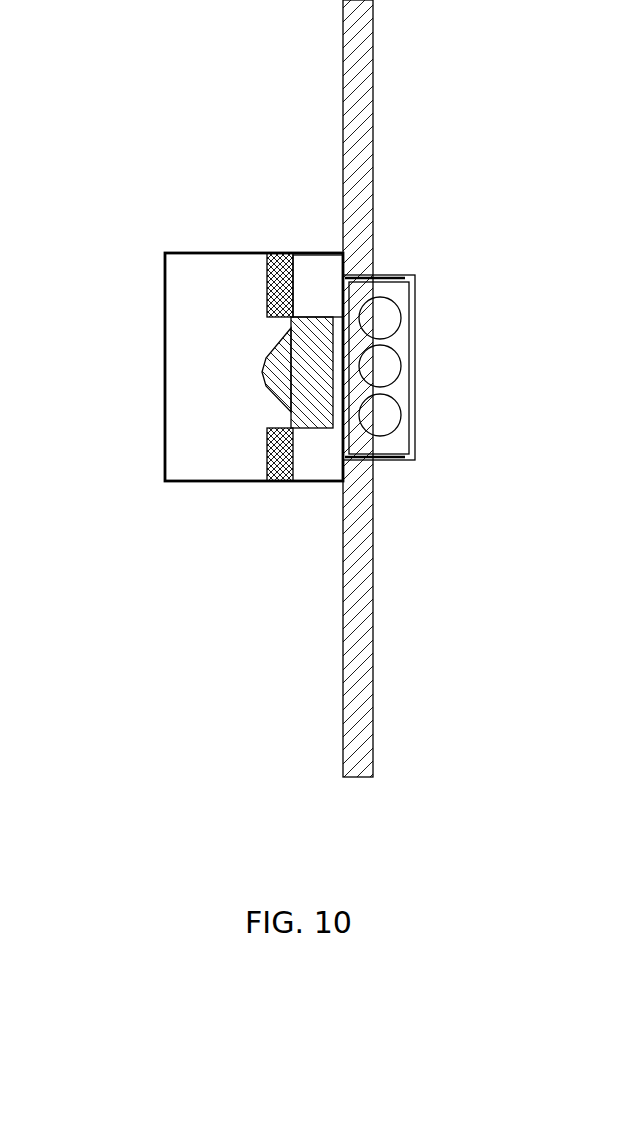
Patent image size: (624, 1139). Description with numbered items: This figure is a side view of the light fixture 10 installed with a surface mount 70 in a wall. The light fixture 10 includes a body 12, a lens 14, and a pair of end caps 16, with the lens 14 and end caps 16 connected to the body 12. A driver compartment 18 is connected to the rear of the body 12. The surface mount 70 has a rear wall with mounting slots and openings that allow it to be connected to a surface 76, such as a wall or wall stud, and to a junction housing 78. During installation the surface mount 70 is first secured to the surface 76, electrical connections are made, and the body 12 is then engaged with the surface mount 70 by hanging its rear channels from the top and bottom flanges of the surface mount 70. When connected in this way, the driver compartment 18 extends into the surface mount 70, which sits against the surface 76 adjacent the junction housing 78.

The light fixture 10 is at (190, 352).
The body 12 is at (265, 264).
The lens 14 is at (162, 426).
The end caps 16 is at (202, 279).
The driver compartment 18 is at (323, 432).
The surface mount 70 is at (325, 253).
The surface 76 is at (372, 158).
The junction housing 78 is at (412, 278).